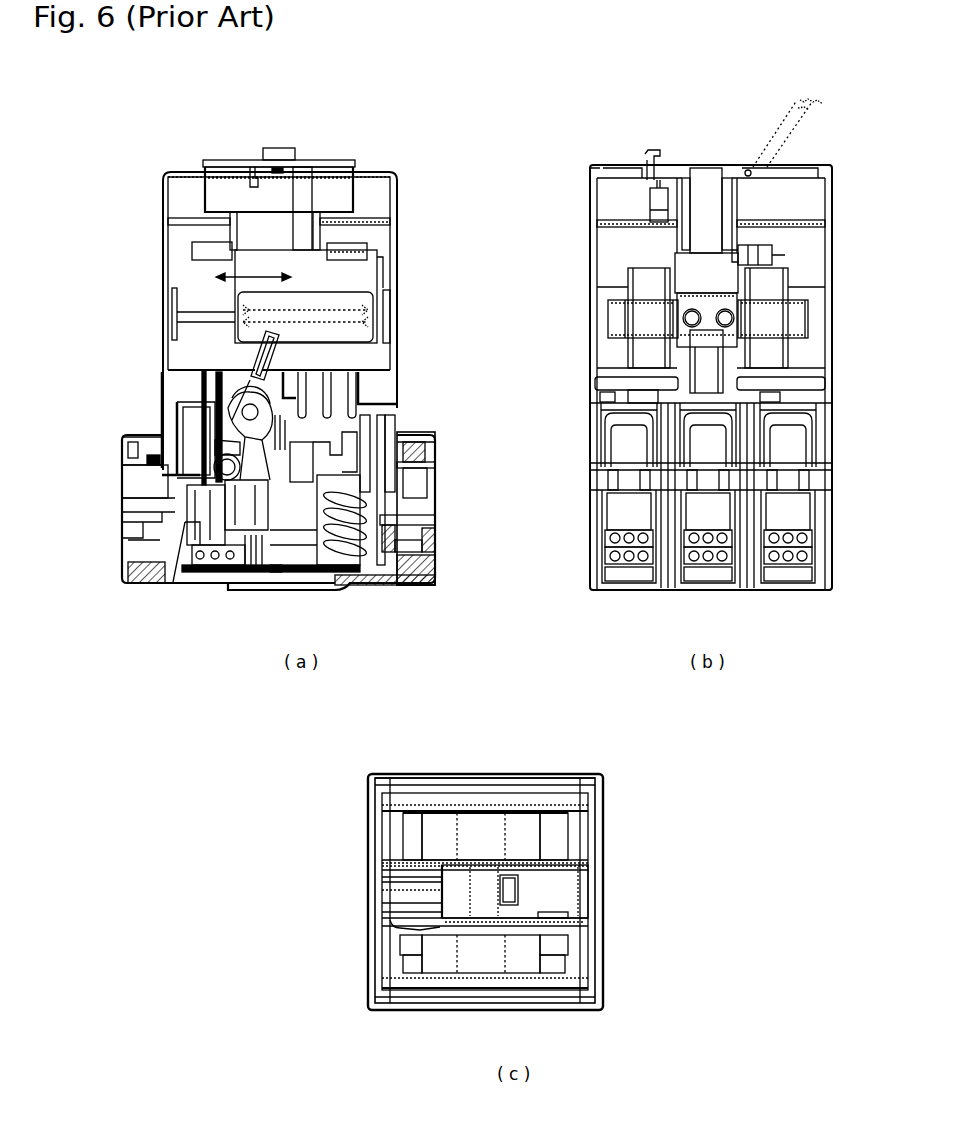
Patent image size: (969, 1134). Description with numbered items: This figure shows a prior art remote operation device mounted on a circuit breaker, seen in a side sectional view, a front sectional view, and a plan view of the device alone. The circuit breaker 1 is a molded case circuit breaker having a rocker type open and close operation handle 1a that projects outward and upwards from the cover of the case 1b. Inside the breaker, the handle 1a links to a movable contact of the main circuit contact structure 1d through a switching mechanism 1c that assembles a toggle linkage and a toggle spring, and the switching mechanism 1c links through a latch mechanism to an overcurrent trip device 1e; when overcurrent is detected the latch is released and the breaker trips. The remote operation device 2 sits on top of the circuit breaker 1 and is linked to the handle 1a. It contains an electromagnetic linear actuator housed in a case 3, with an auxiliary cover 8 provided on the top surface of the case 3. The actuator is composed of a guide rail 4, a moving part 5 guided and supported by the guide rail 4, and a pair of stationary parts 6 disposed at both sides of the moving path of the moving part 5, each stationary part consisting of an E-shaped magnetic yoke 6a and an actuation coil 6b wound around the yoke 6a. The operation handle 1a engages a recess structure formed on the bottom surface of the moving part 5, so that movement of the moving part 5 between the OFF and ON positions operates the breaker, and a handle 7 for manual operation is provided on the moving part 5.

The circuit breaker 1 is at (121, 475).
The open and close operation handle 1a is at (277, 362).
The case of the breaker 1b is at (359, 400).
The switching mechanism 1c is at (252, 498).
The main circuit contact structure 1d is at (173, 582).
The overcurrent trip device 1e is at (345, 500).
The remote operation device 2 is at (160, 301).
The case 3 is at (163, 180).
The guide rail 4 is at (213, 322).
The moving part 5 is at (348, 304).
The stationary part 6 is at (877, 242).
The E-shaped magnetic yoke 6a is at (787, 320).
The actuation coil 6b is at (777, 288).
The handle for manual operation 7 is at (307, 205).
The auxiliary cover 8 is at (250, 160).